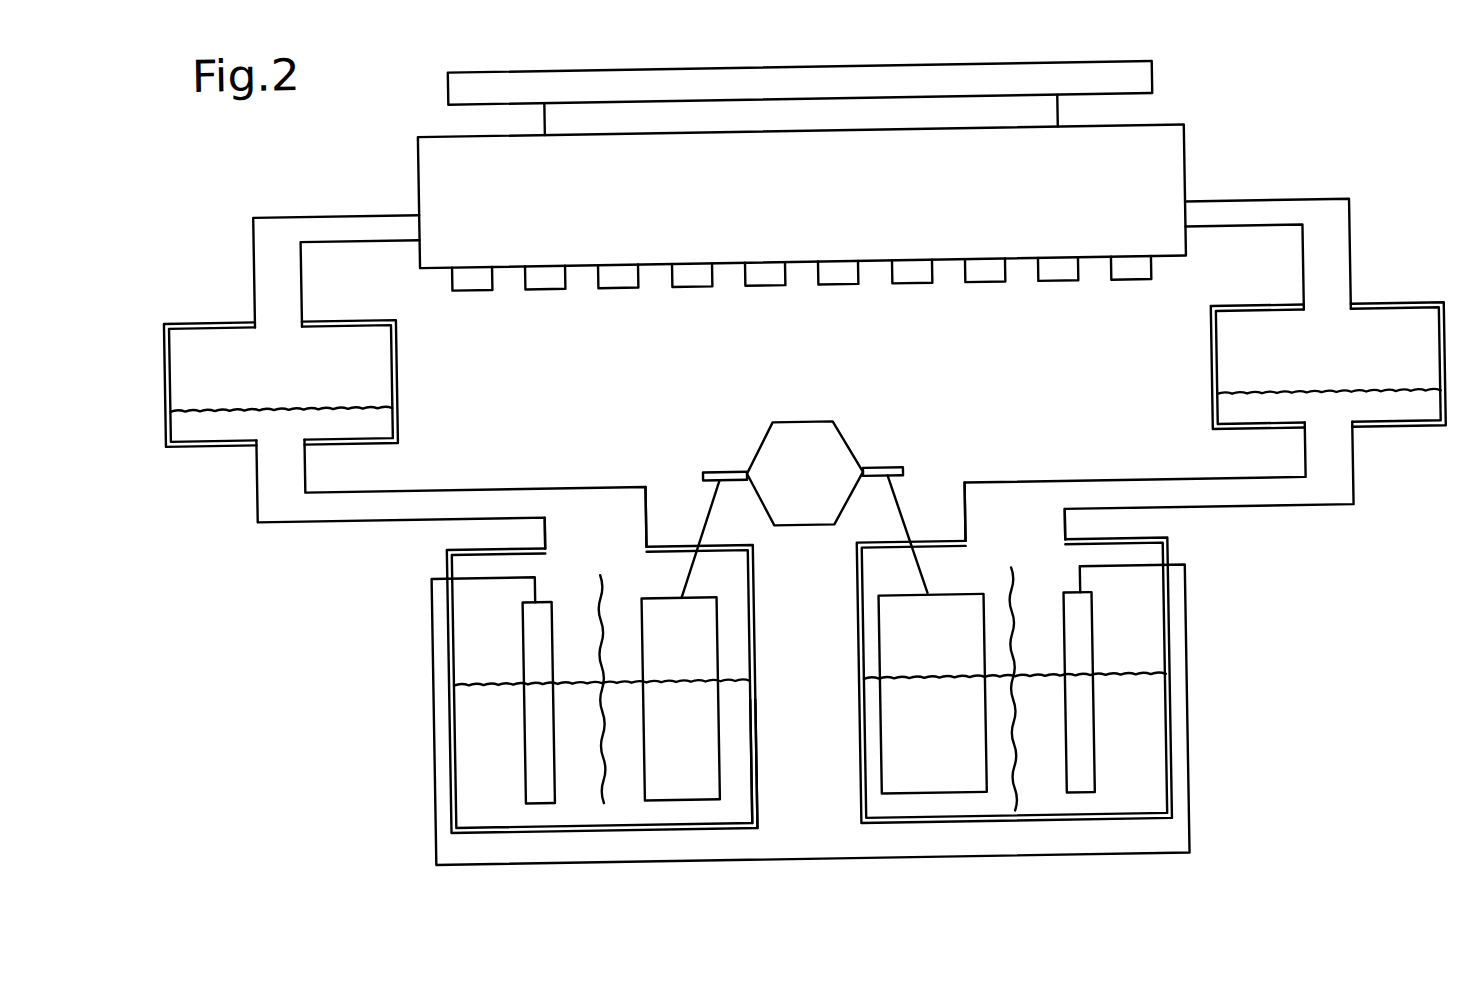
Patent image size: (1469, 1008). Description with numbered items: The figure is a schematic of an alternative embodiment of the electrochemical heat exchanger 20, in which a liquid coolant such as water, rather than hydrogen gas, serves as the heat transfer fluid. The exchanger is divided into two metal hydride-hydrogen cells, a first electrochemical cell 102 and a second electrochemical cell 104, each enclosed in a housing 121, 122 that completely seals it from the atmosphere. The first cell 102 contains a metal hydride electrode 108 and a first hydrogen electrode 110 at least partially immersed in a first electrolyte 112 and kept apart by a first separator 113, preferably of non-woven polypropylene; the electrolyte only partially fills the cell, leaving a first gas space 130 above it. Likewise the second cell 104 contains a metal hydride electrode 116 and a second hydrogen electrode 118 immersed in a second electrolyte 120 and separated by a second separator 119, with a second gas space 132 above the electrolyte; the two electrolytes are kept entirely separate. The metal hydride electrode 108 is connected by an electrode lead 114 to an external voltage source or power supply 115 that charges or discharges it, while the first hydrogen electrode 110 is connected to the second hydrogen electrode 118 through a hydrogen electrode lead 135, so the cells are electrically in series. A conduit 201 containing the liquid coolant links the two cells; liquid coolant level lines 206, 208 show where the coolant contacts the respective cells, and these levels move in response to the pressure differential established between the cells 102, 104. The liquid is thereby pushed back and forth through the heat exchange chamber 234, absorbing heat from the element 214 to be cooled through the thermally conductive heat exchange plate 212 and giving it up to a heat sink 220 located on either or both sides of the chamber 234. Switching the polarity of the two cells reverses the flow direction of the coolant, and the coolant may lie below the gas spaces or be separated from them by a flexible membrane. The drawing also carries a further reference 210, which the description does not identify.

The electrochemical heat exchanger 20 is at (1234, 186).
The first electrochemical cell 102 is at (446, 632).
The second electrochemical cell 104 is at (1136, 734).
The metal hydride electrode 108 is at (675, 774).
The first hydrogen electrode 110 is at (537, 780).
The first electrolyte 112 is at (732, 697).
The first separator 113 is at (593, 810).
The electrode lead 114 is at (705, 511).
The power supply 115 is at (822, 490).
The metal hydride electrode 116 is at (923, 783).
The second hydrogen electrode 118 is at (1073, 786).
The second separator 119 is at (1017, 800).
The second electrolyte 120 is at (908, 525).
The housing 121 is at (753, 778).
The housing 122 is at (856, 722).
The first gas space 130 is at (585, 522).
The second gas space 132 is at (1012, 525).
The hydrogen electrode lead 135 is at (842, 860).
The conduit 201 is at (258, 248).
The liquid coolant level line 206 is at (229, 403).
The liquid coolant level line 208 is at (1395, 403).
The first reservoir 210 is at (399, 358).
The heat exchange plate 212 is at (551, 117).
The element to be cooled 214 is at (1089, 69).
The heat sink 220 is at (991, 277).
The heat exchange chamber 234 is at (822, 228).